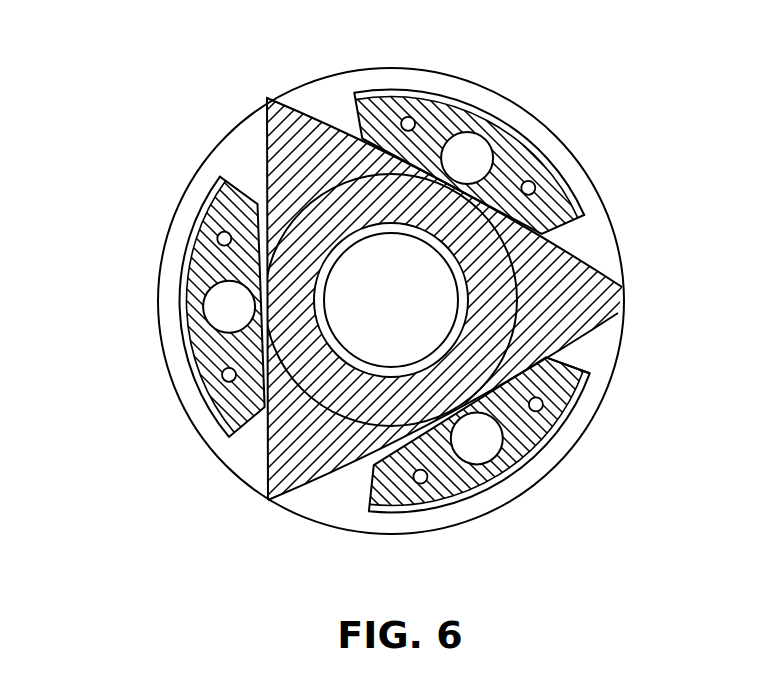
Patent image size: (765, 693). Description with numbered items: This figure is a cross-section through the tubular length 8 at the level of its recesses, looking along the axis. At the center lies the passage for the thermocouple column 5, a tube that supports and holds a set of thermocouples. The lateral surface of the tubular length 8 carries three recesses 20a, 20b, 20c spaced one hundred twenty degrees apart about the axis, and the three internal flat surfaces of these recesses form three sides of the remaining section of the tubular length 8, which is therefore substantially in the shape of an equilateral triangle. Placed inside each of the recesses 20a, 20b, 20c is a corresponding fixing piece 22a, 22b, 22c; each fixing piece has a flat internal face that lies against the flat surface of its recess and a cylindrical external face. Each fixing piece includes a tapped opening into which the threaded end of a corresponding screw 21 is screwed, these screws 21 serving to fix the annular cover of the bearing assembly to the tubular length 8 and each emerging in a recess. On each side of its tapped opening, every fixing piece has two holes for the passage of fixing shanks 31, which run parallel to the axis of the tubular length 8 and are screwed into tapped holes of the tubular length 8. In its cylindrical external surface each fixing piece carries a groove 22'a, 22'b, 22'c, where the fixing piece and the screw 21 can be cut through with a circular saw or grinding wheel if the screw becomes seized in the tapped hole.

The thermocouple column 5 is at (400, 314).
The tubular length 8 is at (604, 302).
The recess 20a is at (599, 368).
The recess 20b is at (583, 245).
The recess 20c is at (253, 453).
The screw 21 is at (480, 456).
The fixing piece 22a is at (575, 363).
The fixing piece 22b is at (527, 160).
The fixing piece 22c is at (207, 345).
The groove 22'a is at (382, 300).
The groove 22'b is at (382, 273).
The groove 22'c is at (382, 300).
The fixing shank 31 is at (412, 117).